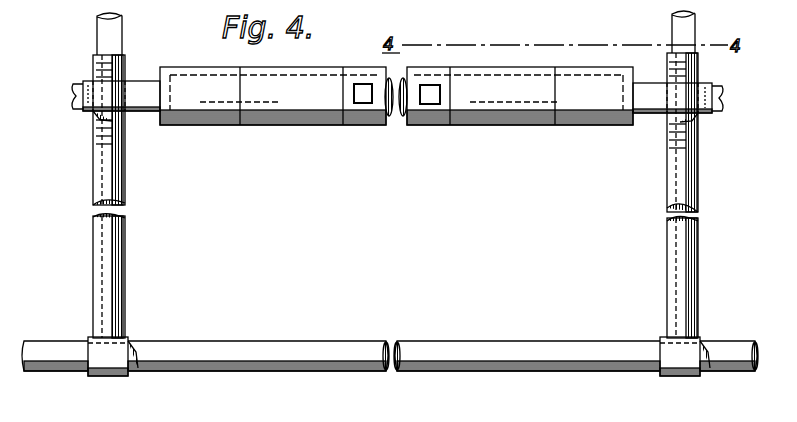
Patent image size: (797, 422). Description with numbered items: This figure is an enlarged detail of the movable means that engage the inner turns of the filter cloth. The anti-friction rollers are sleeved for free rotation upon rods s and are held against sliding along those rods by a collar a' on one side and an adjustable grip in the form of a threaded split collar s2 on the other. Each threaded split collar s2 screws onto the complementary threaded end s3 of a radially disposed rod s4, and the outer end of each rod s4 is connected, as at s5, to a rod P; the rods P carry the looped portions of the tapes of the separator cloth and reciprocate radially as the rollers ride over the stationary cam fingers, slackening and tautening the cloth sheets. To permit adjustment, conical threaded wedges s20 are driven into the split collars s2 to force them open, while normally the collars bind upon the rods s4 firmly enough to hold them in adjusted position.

The rod s is at (297, 115).
The threaded split collar s2 is at (137, 100).
The threaded end s3 is at (93, 135).
The radially disposed rod s4 is at (115, 251).
The connection to rod P s5 is at (98, 376).
The conical threaded wedge s20 is at (72, 98).
The collar a' is at (397, 119).
The rod P is at (406, 350).